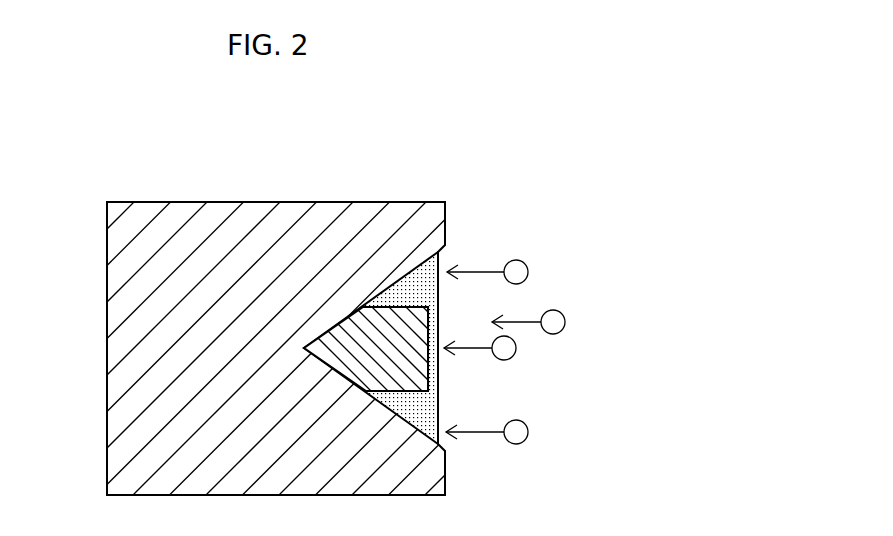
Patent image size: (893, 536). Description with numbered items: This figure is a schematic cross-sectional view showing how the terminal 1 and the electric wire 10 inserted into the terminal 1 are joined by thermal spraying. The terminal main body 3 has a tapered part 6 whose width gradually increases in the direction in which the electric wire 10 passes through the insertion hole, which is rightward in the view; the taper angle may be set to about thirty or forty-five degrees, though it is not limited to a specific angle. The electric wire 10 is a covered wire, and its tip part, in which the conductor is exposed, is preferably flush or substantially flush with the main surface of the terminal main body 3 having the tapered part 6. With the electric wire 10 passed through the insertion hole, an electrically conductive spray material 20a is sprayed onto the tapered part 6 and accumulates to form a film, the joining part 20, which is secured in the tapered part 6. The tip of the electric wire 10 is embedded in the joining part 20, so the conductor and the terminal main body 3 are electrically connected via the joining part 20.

The terminal 1 is at (80, 160).
The terminal main body 3 is at (142, 297).
The tapered part 6 is at (386, 296).
The electric wire 10 is at (354, 354).
The joining part 20 is at (443, 258).
The spray material 20a is at (529, 271).